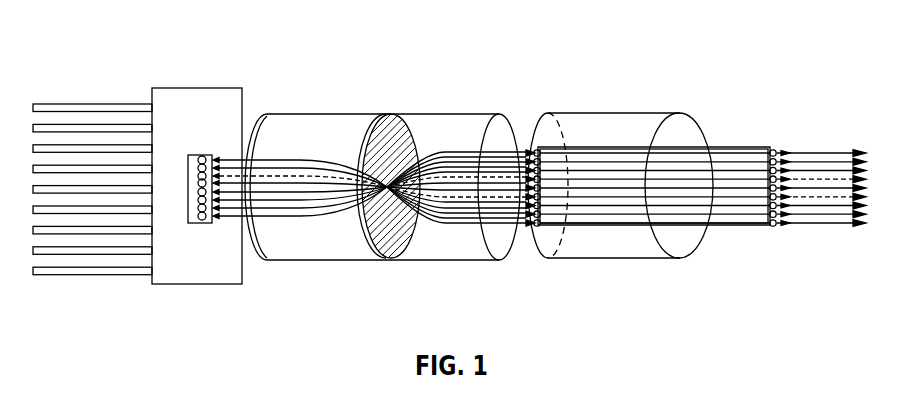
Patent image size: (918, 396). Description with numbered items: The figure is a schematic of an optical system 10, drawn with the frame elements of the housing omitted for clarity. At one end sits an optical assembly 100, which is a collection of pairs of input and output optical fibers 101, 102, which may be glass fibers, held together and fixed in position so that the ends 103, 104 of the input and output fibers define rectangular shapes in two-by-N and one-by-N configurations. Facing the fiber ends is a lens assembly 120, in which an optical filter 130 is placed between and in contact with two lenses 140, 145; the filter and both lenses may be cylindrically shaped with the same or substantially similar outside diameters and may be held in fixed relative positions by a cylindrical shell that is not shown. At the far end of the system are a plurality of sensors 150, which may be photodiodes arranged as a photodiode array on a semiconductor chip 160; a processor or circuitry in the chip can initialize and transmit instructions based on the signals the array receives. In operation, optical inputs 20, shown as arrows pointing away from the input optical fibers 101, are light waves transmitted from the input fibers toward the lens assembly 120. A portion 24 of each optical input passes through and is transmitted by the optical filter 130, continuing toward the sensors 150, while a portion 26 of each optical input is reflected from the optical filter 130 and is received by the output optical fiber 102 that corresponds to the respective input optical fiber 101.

The optical system 10 is at (100, 54).
The optical inputs 20 is at (460, 155).
The portion of transmitted optical inputs 24 is at (332, 207).
The portion of transmitted optical inputs 26 is at (432, 203).
The optical assembly 100 is at (695, 86).
The input optical fibers 101 is at (773, 149).
The output optical fibers 102 is at (759, 211).
The ends of input optical fibers 103 is at (538, 231).
The ends of output optical fibers 104 is at (695, 231).
The lens assembly 120 is at (372, 92).
The optical filter 130 is at (395, 222).
The lens 140 is at (479, 250).
The lens 145 is at (297, 250).
The sensors 150 is at (202, 156).
The semiconductor chip 160 is at (202, 240).